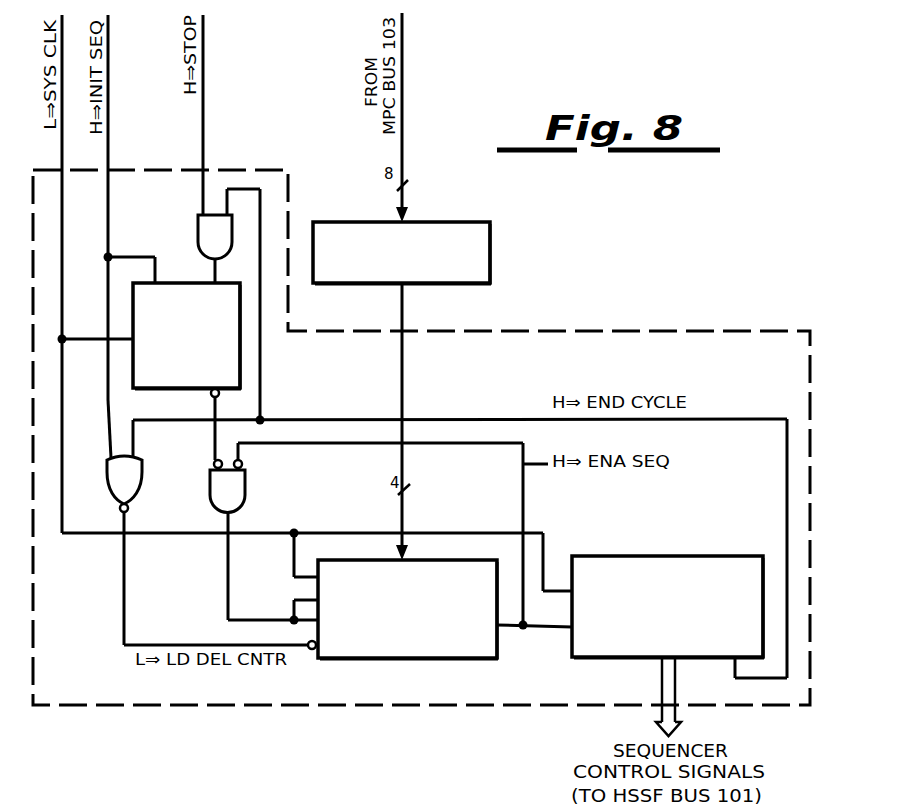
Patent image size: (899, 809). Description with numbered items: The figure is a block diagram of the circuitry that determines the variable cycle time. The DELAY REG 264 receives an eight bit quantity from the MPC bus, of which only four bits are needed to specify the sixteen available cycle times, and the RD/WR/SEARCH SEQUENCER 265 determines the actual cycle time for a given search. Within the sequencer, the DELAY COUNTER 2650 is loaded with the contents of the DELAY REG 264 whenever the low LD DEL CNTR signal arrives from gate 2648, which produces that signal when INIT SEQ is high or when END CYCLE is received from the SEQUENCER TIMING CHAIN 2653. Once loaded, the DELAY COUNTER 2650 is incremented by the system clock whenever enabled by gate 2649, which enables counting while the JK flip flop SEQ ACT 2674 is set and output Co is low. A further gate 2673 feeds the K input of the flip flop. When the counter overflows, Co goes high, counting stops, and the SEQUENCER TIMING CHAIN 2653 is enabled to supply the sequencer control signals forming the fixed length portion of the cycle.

The DELAY REG 264 is at (490, 249).
The RD/WR/SEARCH SEQUENCER 265 is at (703, 331).
The gate 2648 is at (142, 478).
The gate 2649 is at (245, 481).
The DELAY COUNTER 2650 is at (410, 660).
The SEQUENCER TIMING CHAIN 2653 is at (658, 556).
The gate 2673 is at (198, 228).
The SEQ ACT JK flip flop 2674 is at (177, 282).